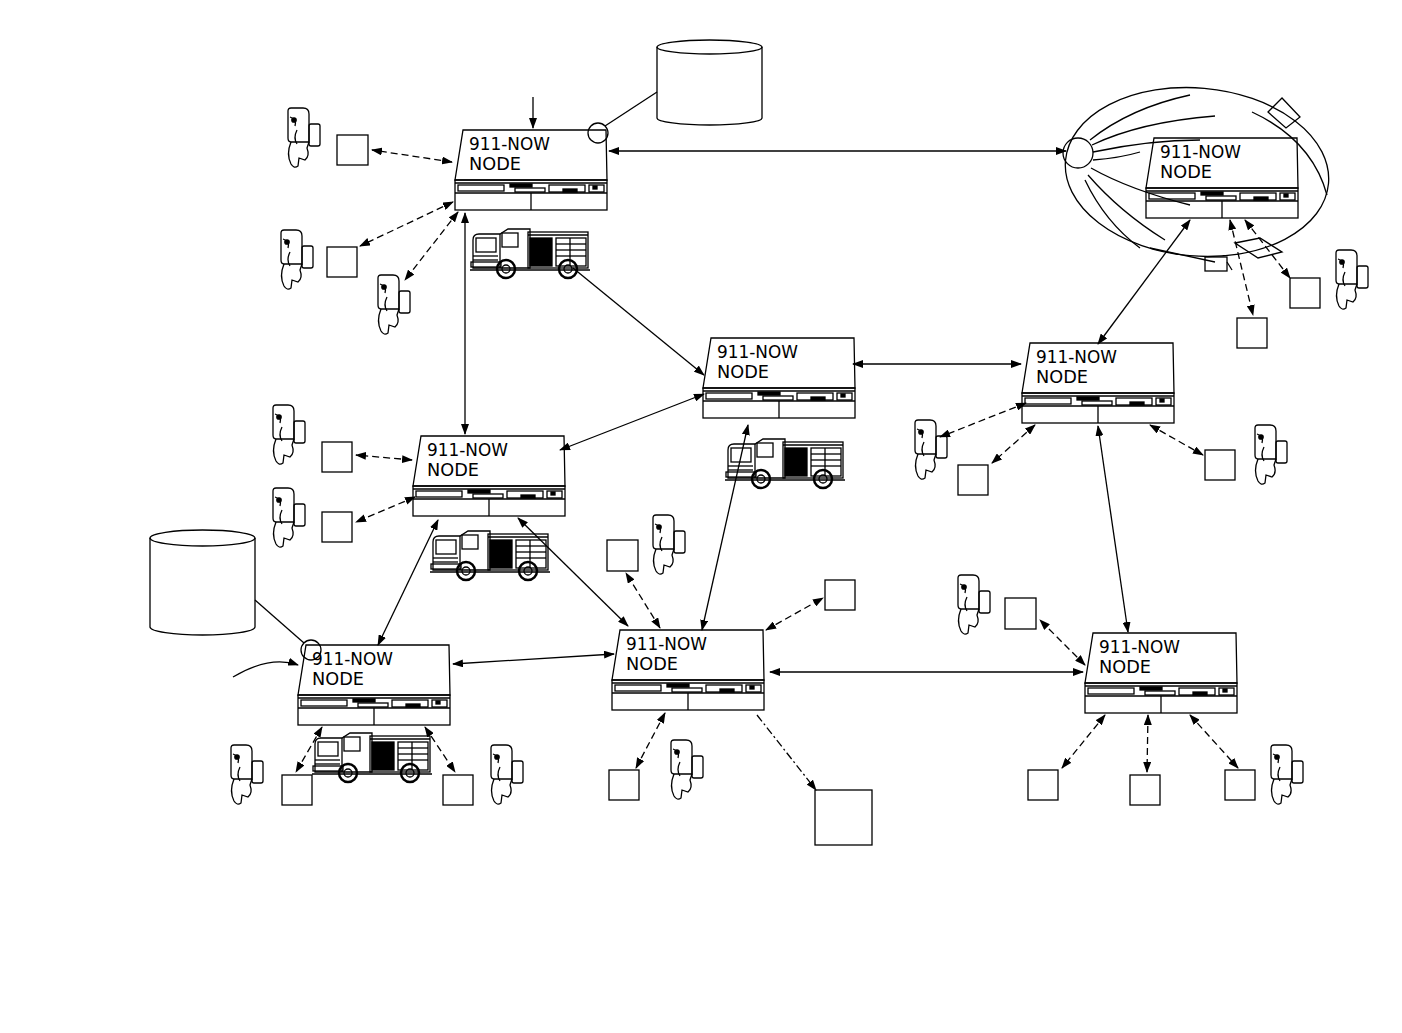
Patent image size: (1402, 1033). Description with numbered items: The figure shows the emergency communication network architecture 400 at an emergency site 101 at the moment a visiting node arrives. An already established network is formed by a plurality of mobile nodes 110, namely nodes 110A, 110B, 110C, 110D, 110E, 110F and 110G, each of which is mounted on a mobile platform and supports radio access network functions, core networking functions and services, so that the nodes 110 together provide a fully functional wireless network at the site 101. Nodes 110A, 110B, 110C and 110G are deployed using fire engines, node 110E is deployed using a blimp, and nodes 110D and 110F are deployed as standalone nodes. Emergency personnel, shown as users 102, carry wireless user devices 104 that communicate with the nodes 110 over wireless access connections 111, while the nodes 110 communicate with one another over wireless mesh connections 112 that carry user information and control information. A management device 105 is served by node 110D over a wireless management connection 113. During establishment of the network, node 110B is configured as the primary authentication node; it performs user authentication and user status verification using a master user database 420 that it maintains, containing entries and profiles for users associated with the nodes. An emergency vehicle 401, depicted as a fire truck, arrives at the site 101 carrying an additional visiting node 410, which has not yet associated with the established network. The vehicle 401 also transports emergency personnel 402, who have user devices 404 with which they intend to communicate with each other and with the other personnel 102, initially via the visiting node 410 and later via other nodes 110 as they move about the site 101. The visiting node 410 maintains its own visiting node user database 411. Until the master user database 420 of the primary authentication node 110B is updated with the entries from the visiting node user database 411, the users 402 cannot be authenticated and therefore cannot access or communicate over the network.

The 911-NOW communication network architecture 400 is at (229, 59).
The emergency site 101 is at (862, 505).
The users 102 is at (300, 176).
The wireless user devices 104 is at (354, 133).
The management device 105 is at (859, 829).
The 911-NOW nodes 110 is at (855, 421).
The 911-NOW node A 110A is at (555, 476).
The 911-NOW node B (primary authentication node) 110B is at (597, 170).
The 911-NOW node C 110C is at (845, 378).
The 911-NOW node D 110D is at (754, 670).
The 911-NOW node E 110E is at (1288, 178).
The 911-NOW node F 110F is at (1164, 383).
The 911-NOW node G 110G is at (1227, 673).
The wireless access connections 111 is at (430, 145).
The wireless mesh connections 112 is at (646, 330).
The wireless management connection 113 is at (780, 748).
The emergency vehicle 401 is at (360, 782).
The emergency personnel (users) 402 is at (243, 813).
The user devices 404 is at (297, 808).
The visiting 911-NOW node 410 is at (437, 678).
The visiting node user database 411 is at (205, 525).
The master user database 420 is at (762, 72).